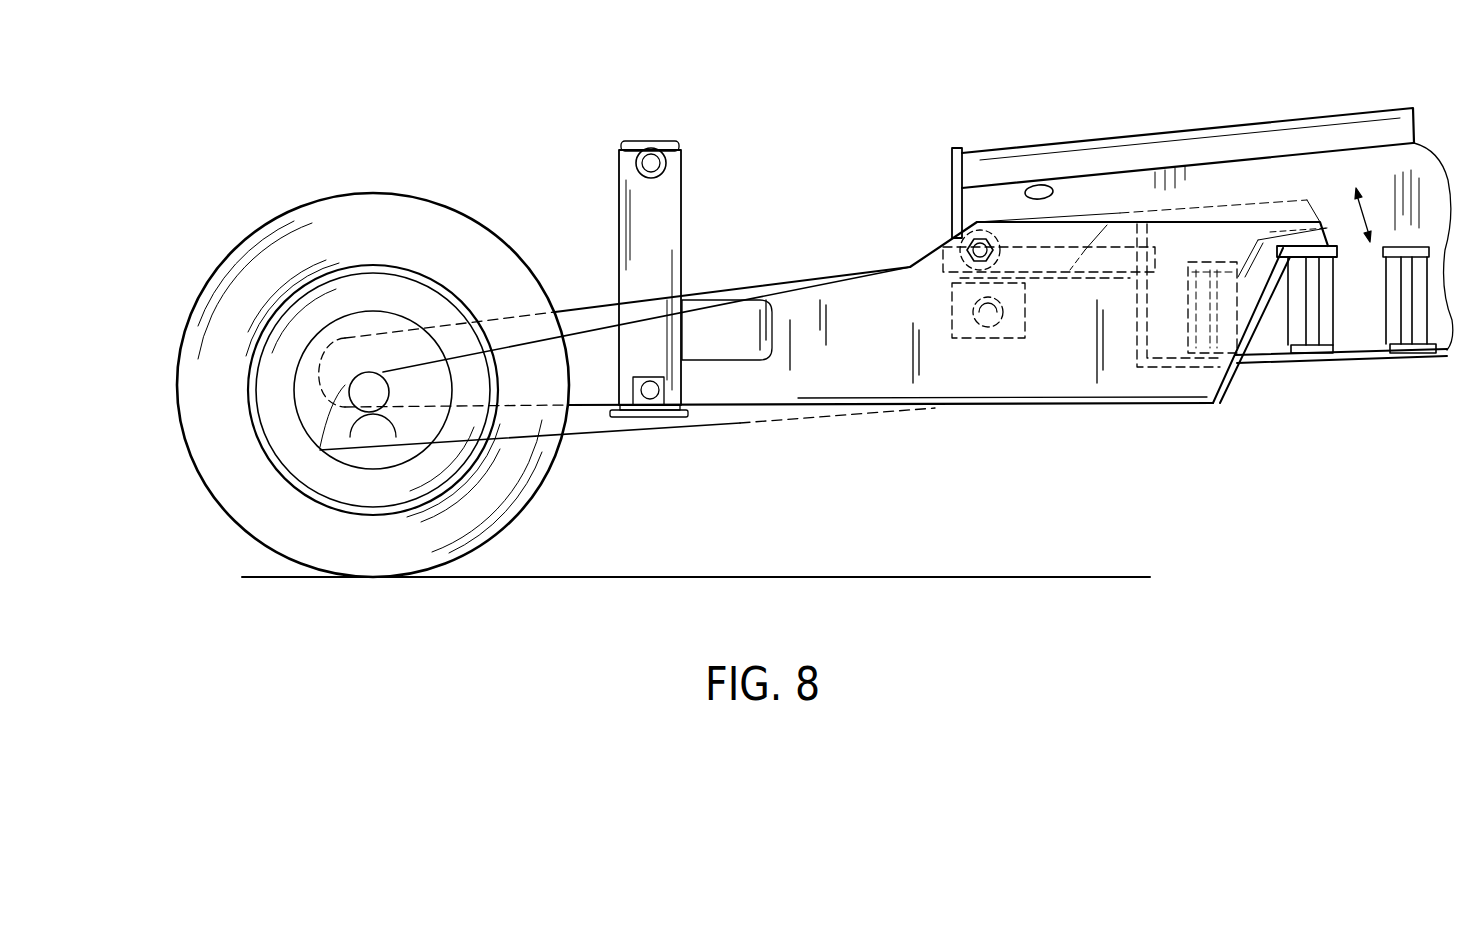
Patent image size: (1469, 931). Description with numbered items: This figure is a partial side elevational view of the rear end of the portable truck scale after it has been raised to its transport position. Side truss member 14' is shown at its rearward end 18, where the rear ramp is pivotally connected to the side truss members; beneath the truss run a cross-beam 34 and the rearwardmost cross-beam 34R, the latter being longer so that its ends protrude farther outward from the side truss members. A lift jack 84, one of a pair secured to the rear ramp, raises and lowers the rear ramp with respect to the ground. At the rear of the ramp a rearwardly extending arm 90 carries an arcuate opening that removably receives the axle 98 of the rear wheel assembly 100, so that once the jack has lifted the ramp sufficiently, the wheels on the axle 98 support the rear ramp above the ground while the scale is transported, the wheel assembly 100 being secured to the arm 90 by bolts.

The rear wheel assembly 100 is at (372, 190).
The axle 98 is at (367, 383).
The rearwardly extending arm 90 is at (583, 303).
The lift jack 84 is at (662, 215).
The rearward end 18 is at (957, 195).
The side truss member 14' is at (1207, 188).
The rearwardmost cross-beam 34R is at (1313, 296).
The cross-beam 34 is at (1410, 295).